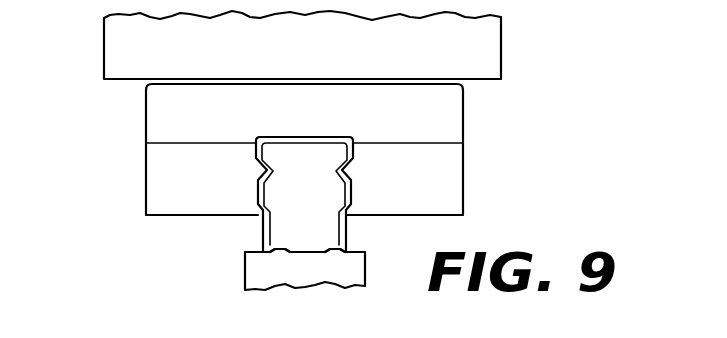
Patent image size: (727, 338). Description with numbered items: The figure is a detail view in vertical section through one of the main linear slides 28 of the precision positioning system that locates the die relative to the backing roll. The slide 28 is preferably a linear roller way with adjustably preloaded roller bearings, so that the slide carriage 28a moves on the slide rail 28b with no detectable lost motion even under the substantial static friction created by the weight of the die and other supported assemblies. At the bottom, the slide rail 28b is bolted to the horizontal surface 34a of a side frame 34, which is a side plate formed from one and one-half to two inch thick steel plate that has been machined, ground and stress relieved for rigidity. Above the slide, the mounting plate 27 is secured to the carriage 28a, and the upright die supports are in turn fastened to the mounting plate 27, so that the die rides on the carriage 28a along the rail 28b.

The mounting plate 27 is at (491, 52).
The main linear slide 28 is at (286, 168).
The slide carriage 28a is at (455, 124).
The slide rail 28b is at (342, 240).
The side frame 34 is at (280, 259).
The horizontal surface 34a is at (262, 250).